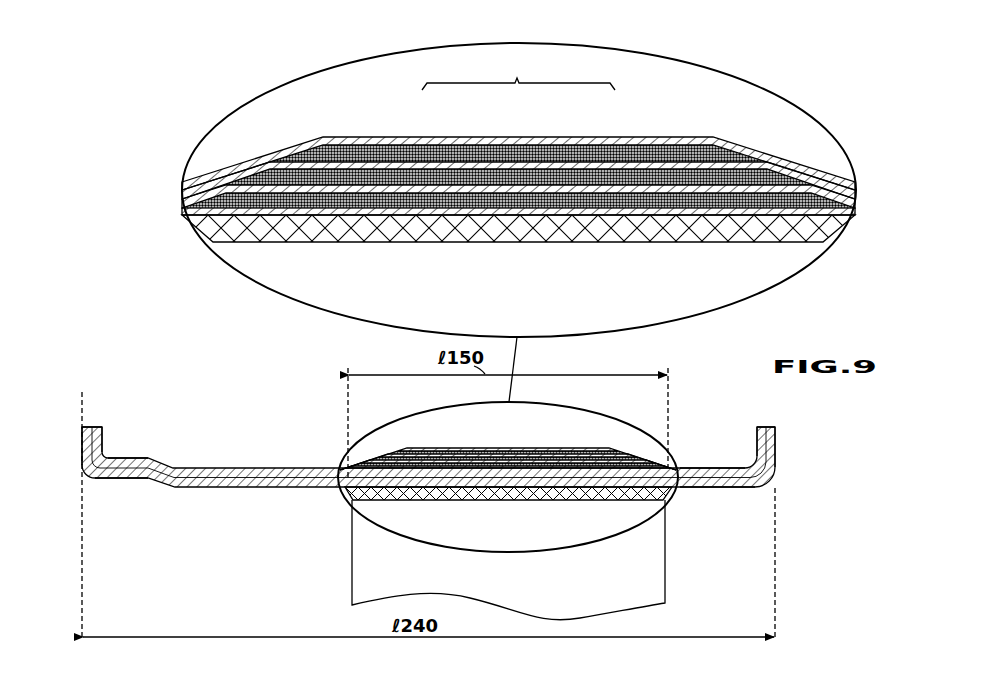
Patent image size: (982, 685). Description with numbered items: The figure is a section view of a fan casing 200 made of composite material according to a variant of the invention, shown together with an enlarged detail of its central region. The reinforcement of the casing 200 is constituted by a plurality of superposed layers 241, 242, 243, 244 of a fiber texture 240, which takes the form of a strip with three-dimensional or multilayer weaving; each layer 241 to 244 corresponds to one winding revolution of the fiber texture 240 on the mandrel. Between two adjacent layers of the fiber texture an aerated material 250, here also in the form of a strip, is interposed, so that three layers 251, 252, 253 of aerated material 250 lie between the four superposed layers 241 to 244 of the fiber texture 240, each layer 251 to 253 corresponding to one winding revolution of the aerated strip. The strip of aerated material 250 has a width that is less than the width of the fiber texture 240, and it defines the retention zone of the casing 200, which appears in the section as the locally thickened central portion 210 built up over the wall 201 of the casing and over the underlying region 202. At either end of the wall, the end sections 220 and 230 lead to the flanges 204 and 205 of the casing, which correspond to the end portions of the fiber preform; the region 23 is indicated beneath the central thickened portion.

The substrate 23 is at (666, 563).
The casing 200 is at (176, 502).
The carrier strip 201 is at (200, 230).
The adhesive layer 202 is at (693, 233).
The flange 204 is at (78, 443).
The flange 205 is at (777, 441).
The layered functional stack 210 is at (492, 248).
The left strip section 220 is at (182, 467).
The right strip section 230 is at (710, 467).
The fiber texture 240 is at (308, 132).
The layer of fiber texture 241 is at (184, 208).
The layer of fiber texture 242 is at (232, 176).
The layer of fiber texture 243 is at (248, 162).
The layer of fiber texture 244 is at (276, 140).
The aerated material 250 is at (518, 73).
The layer of aerated material 251 is at (590, 202).
The layer of aerated material 252 is at (518, 177).
The layer of aerated material 253 is at (447, 153).